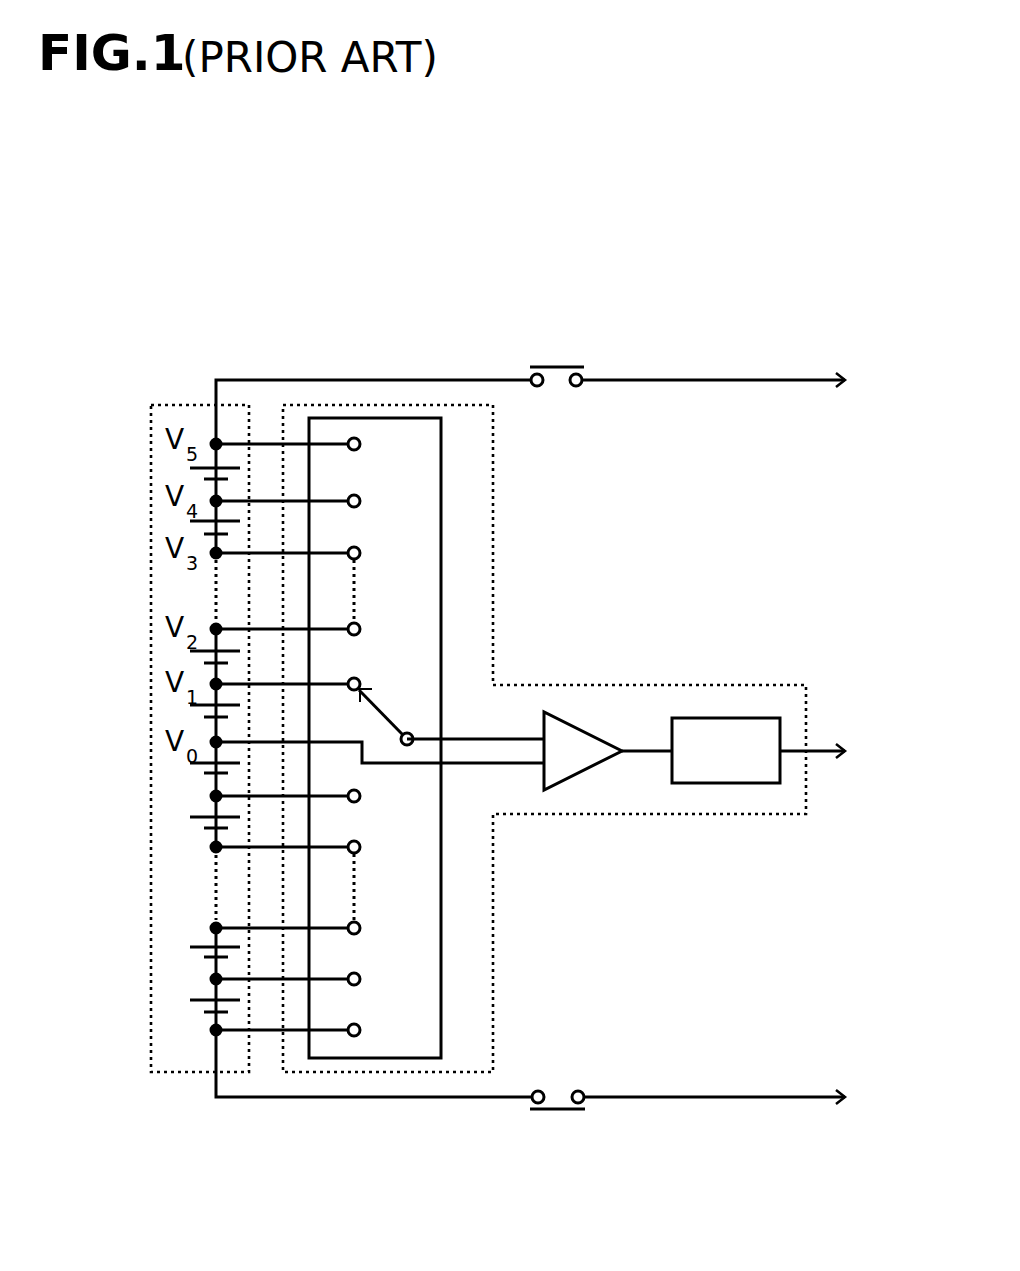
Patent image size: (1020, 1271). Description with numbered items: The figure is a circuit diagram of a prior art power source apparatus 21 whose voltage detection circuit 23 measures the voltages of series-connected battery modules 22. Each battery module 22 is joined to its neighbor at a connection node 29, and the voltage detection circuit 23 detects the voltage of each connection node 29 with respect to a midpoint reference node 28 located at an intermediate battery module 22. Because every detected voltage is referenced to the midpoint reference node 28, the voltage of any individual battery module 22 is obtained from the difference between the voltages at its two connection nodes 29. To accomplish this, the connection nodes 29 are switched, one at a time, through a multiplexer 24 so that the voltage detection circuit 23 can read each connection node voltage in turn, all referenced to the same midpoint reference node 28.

The battery pack 21 is at (151, 980).
The battery module 22 is at (210, 648).
The voltage detection circuit 23 is at (659, 814).
The multiplexer 24 is at (442, 928).
The midpoint reference node 28 is at (213, 742).
The connection node 29 is at (268, 742).